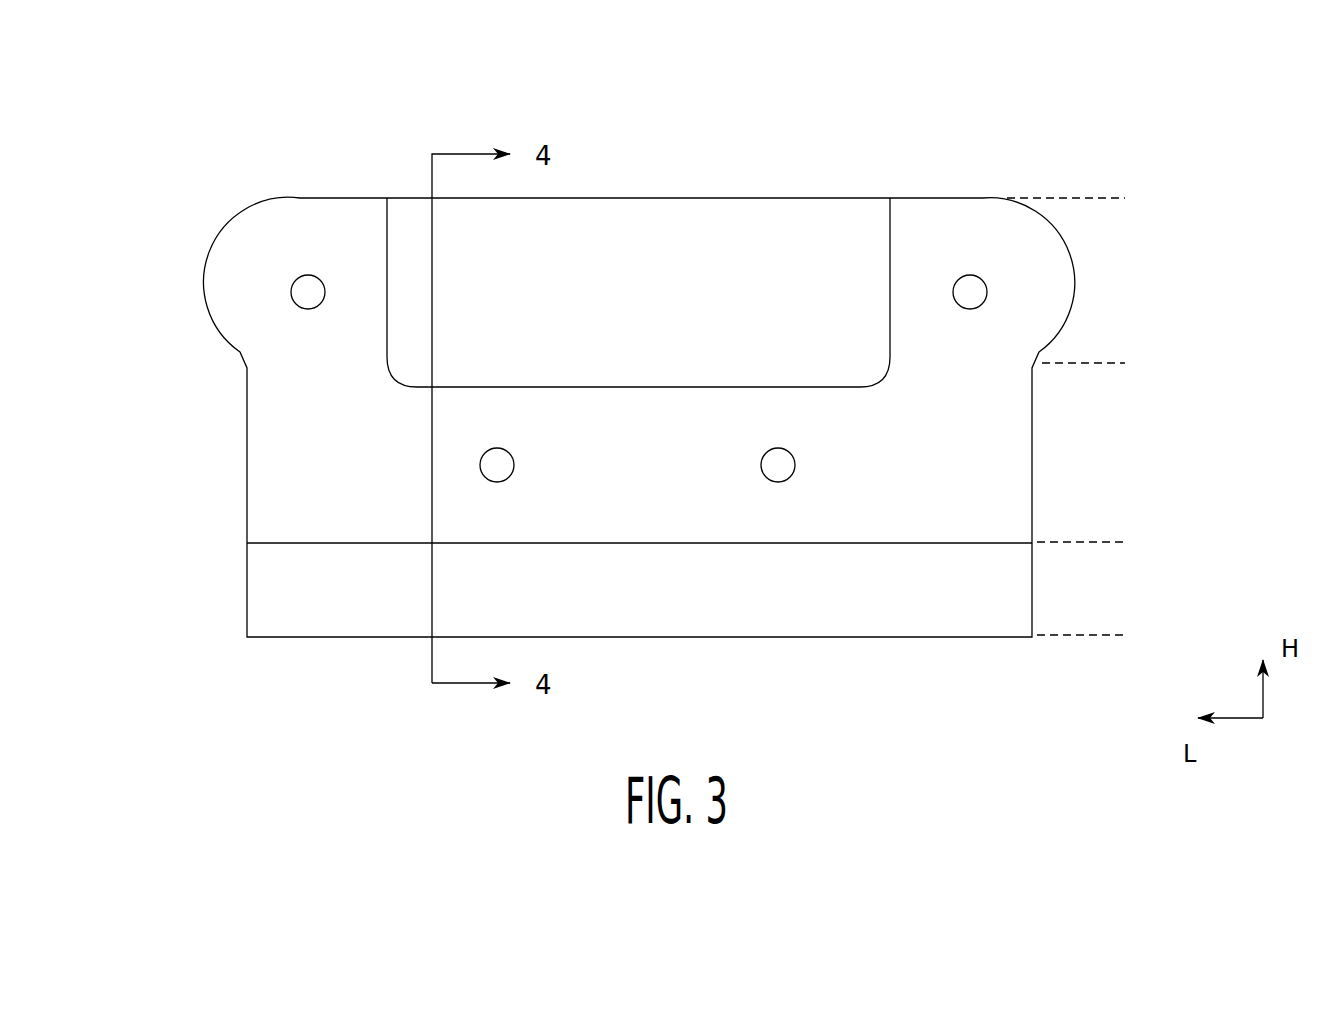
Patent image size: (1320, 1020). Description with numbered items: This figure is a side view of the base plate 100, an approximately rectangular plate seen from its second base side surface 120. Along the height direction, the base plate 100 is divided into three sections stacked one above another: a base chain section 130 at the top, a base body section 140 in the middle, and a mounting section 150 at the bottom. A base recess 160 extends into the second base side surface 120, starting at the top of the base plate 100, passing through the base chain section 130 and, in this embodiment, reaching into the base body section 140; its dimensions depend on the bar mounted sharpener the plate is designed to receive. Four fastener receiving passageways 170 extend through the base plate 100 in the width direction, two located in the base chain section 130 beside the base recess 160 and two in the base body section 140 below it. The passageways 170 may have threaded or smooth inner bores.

The base plate 100 is at (1090, 86).
The second base side surface 120 is at (278, 408).
The base chain section 130 is at (1125, 198).
The base body section 140 is at (1125, 363).
The mounting section 150 is at (1125, 542).
The base recess 160 is at (681, 235).
The fastener receiving passageways 170 is at (308, 288).